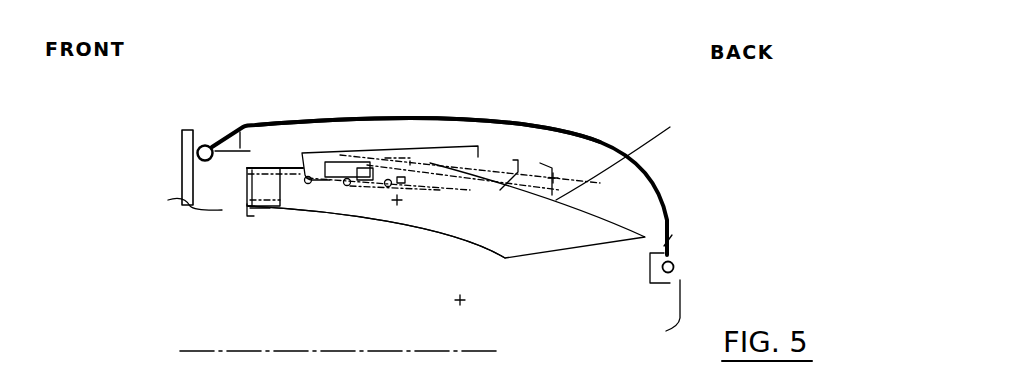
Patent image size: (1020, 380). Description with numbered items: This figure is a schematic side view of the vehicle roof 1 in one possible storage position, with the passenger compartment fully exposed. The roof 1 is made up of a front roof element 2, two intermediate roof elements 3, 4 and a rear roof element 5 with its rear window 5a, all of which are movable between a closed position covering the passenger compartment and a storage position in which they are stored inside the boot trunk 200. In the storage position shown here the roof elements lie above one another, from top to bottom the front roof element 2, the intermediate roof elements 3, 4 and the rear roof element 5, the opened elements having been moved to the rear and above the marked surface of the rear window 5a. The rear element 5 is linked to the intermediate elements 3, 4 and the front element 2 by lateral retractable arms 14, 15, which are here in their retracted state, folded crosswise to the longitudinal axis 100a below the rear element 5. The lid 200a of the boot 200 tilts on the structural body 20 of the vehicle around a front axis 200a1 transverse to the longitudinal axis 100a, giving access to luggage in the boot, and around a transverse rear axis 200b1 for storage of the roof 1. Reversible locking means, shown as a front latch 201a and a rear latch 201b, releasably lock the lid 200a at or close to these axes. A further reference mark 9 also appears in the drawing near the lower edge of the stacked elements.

The roof 1 is at (389, 228).
The front roof element 2 is at (368, 146).
The intermediate roof element 3 is at (522, 150).
The intermediate roof element 4 is at (583, 153).
The rear roof element 5 is at (541, 237).
The rear window 5a is at (632, 151).
The pivot point 9 is at (460, 298).
The lateral retractable arm 14 is at (247, 205).
The lateral retractable arm 15 is at (273, 212).
The structural body 20 is at (181, 171).
The longitudinal axis 100a is at (235, 350).
The boot trunk 200 is at (606, 194).
The lid 200a is at (462, 119).
The front axis 200a1 is at (203, 145).
The rear axis 200b1 is at (675, 266).
The latch 201a is at (242, 142).
The latch 201b is at (670, 238).